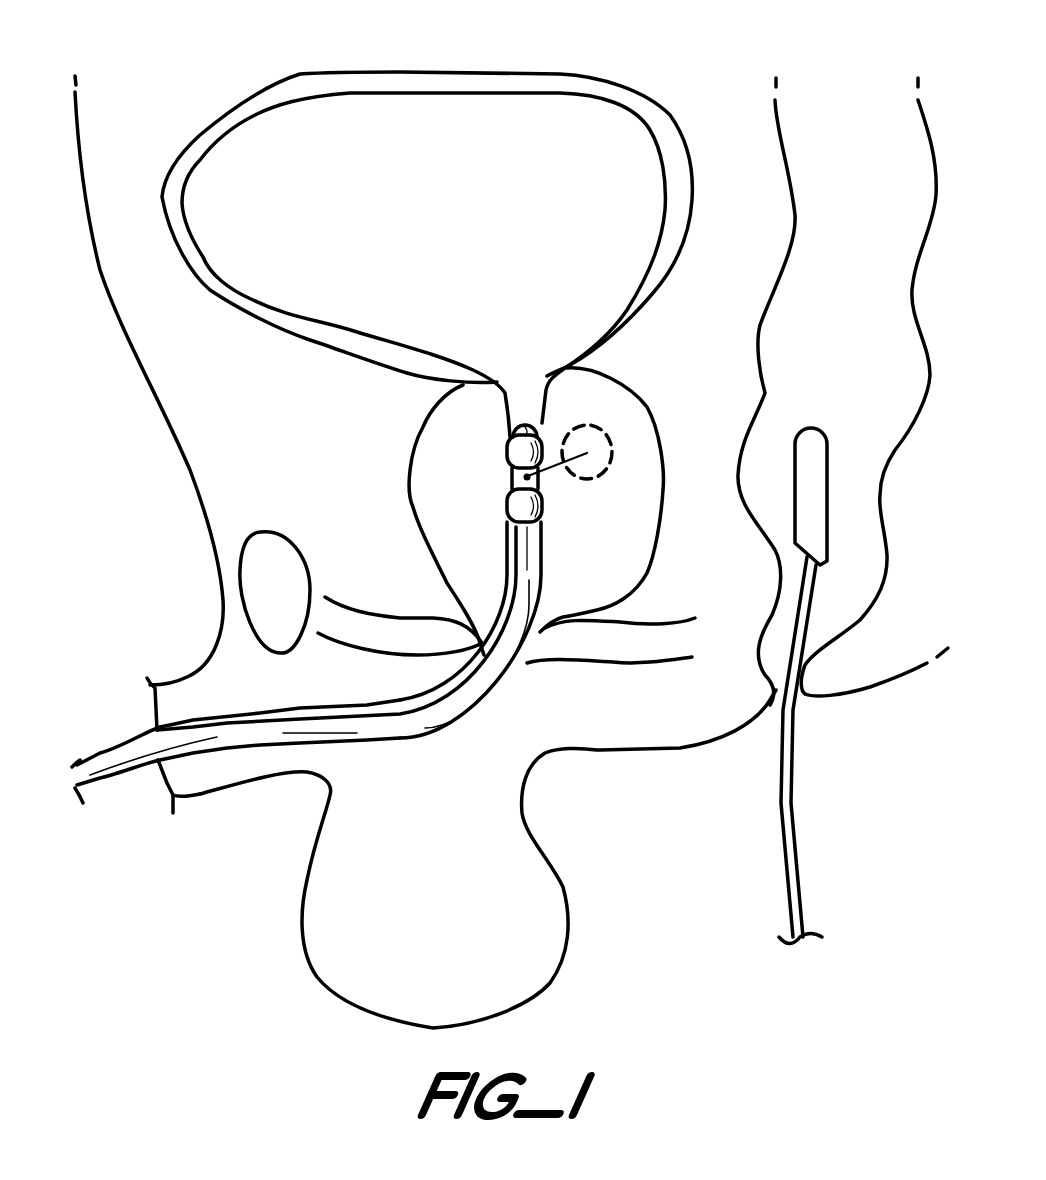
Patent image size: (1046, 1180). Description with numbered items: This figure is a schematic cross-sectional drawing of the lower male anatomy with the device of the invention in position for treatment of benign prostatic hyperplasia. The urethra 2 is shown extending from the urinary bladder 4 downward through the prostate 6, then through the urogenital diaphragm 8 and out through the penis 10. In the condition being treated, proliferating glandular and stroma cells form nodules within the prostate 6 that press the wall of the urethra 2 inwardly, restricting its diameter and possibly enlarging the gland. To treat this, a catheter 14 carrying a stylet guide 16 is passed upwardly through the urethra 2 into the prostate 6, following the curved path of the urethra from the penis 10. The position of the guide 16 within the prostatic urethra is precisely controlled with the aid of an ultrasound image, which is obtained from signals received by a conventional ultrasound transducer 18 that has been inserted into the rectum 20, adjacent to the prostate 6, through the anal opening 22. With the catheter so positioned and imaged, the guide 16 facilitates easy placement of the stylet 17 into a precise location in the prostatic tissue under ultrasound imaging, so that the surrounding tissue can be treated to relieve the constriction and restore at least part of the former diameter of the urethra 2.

The urethra 2 is at (473, 723).
The urinary bladder 4 is at (413, 127).
The prostate 6 is at (413, 433).
The urogenital diaphragm 8 is at (380, 628).
The penis 10 is at (200, 797).
The catheter 14 is at (122, 748).
The stylet guide 16 is at (507, 508).
The stylet 17 is at (553, 472).
The ultrasound transducer 18 is at (813, 452).
The rectum 20 is at (832, 148).
The anal opening 22 is at (803, 700).